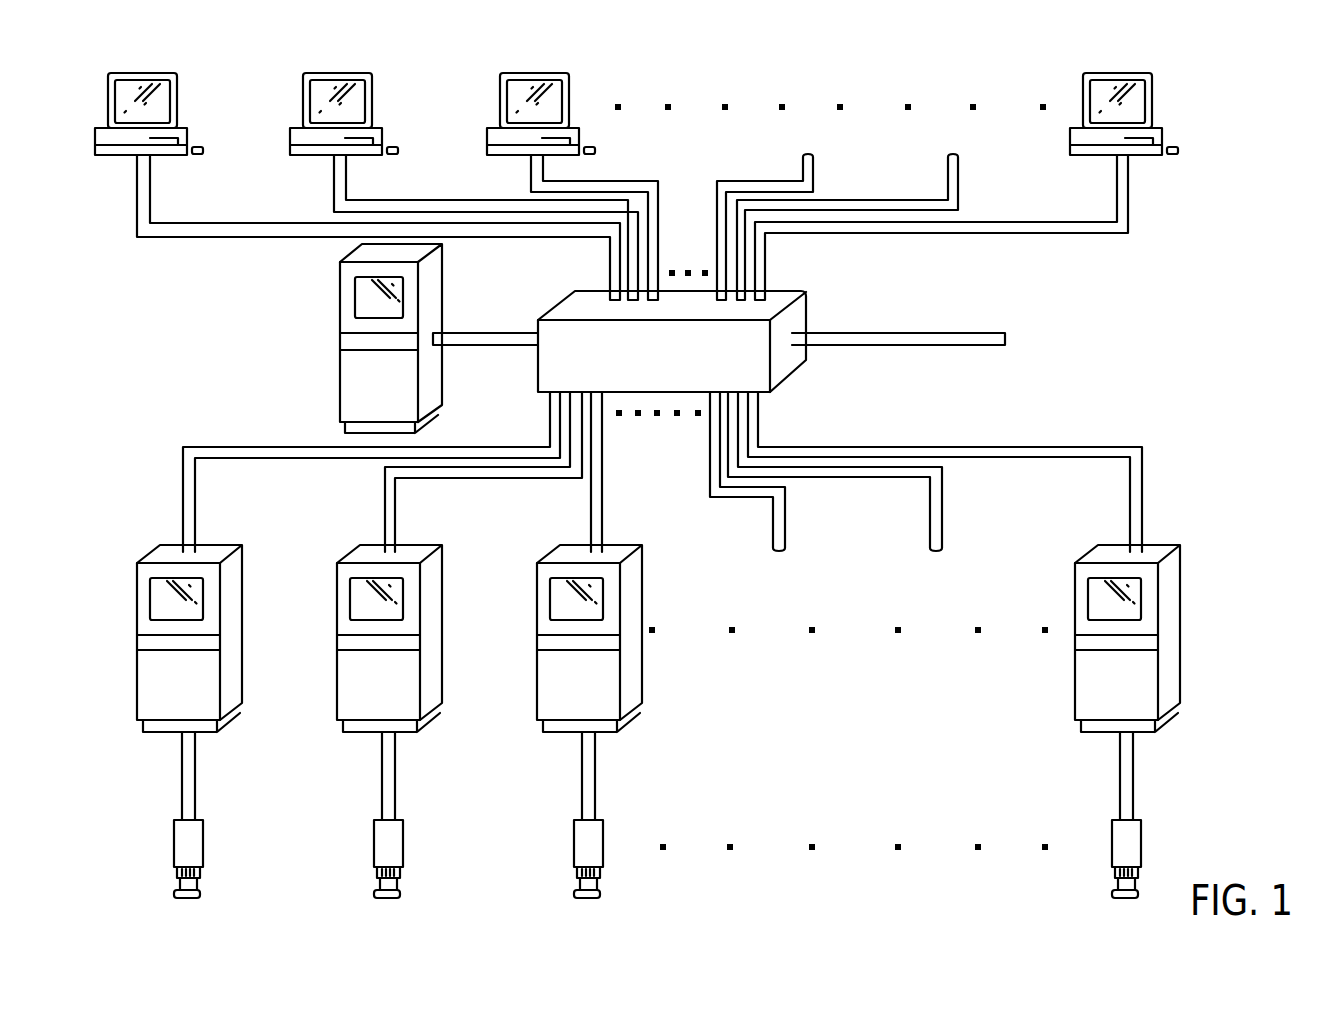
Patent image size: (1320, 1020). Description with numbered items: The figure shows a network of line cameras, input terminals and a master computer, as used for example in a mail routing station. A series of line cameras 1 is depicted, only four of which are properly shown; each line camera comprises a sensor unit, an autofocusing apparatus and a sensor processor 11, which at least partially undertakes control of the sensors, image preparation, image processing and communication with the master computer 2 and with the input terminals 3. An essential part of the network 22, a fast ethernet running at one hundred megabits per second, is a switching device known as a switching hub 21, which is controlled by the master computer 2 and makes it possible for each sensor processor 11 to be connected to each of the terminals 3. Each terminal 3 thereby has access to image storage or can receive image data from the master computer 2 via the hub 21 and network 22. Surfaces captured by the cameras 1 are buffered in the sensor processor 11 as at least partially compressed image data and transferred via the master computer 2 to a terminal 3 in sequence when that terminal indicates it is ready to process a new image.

The line camera 1 is at (592, 855).
The sensor processor 11 is at (606, 683).
The master computer 2 is at (355, 375).
The switching hub 21 is at (788, 306).
The network 22 is at (755, 423).
The input terminal 3 is at (553, 97).